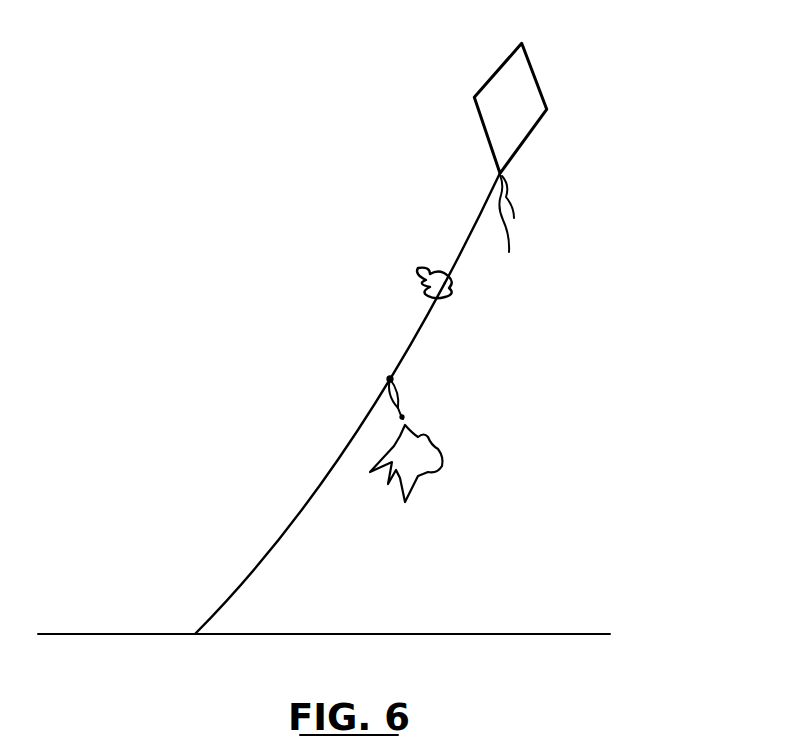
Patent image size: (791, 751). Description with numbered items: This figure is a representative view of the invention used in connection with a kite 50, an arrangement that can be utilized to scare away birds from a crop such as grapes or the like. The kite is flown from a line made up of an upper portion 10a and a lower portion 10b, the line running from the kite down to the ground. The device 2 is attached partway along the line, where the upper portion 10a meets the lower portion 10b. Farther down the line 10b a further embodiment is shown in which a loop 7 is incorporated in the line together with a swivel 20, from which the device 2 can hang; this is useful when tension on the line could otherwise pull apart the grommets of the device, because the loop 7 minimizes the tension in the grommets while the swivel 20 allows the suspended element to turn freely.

The kite 50 is at (550, 70).
The upper string segment 10a is at (455, 262).
The line 10b is at (323, 485).
The device 2 is at (466, 285).
The loop 7 is at (399, 391).
The swivel 20 is at (405, 423).